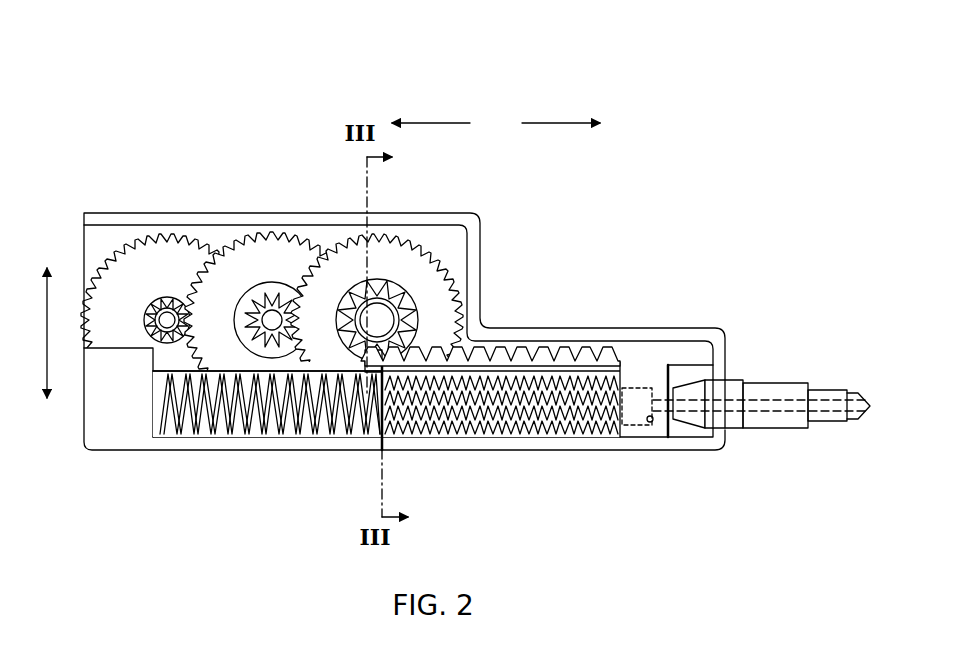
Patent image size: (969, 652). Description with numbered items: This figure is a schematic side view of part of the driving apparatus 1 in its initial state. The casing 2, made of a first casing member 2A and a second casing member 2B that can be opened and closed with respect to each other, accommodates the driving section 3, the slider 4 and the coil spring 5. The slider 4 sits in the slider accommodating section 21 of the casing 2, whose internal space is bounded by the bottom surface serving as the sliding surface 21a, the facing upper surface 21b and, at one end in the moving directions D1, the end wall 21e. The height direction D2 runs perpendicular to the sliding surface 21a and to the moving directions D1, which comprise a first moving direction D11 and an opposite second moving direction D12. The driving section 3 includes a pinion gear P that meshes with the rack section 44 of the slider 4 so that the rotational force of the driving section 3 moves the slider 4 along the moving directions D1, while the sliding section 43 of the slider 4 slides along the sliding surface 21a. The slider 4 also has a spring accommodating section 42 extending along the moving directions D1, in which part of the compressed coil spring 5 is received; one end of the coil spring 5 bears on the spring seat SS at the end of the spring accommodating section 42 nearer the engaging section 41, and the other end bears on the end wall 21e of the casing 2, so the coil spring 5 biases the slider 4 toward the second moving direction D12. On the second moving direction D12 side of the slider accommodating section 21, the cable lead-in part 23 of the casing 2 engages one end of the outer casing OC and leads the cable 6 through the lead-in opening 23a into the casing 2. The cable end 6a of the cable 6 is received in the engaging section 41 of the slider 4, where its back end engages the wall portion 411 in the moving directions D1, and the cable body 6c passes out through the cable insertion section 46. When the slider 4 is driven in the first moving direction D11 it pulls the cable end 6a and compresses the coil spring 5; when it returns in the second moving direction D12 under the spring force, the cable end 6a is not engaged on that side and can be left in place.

The driving apparatus 1 is at (742, 201).
The casing 2 is at (220, 249).
The first casing member 2A is at (128, 362).
The second casing member 2B is at (261, 271).
The driving section 3 is at (328, 237).
The slider 4 is at (567, 373).
The coil spring 5 is at (250, 395).
The cable 6 is at (761, 384).
The cable end 6a is at (626, 425).
The cable body 6c is at (857, 416).
The slider accommodating section 21 is at (333, 393).
The sliding surface 21a is at (340, 400).
The upper surface 21b is at (510, 347).
The end wall 21e is at (190, 390).
The cable lead-in part 23 is at (742, 396).
The lead-in opening 23a is at (730, 426).
The engaging section 41 is at (662, 368).
The spring accommodating section 42 is at (558, 327).
The sliding section 43 is at (452, 420).
The rack section 44 is at (415, 347).
The cable insertion section 46 is at (684, 428).
The wall portion 411 is at (648, 423).
The moving directions D1 is at (575, 53).
The first moving direction D11 is at (430, 123).
The second moving direction D12 is at (560, 123).
The height direction D2 is at (47, 262).
The pinion gear P is at (401, 348).
The spring seat SS is at (592, 327).
The outer casing OC is at (828, 397).